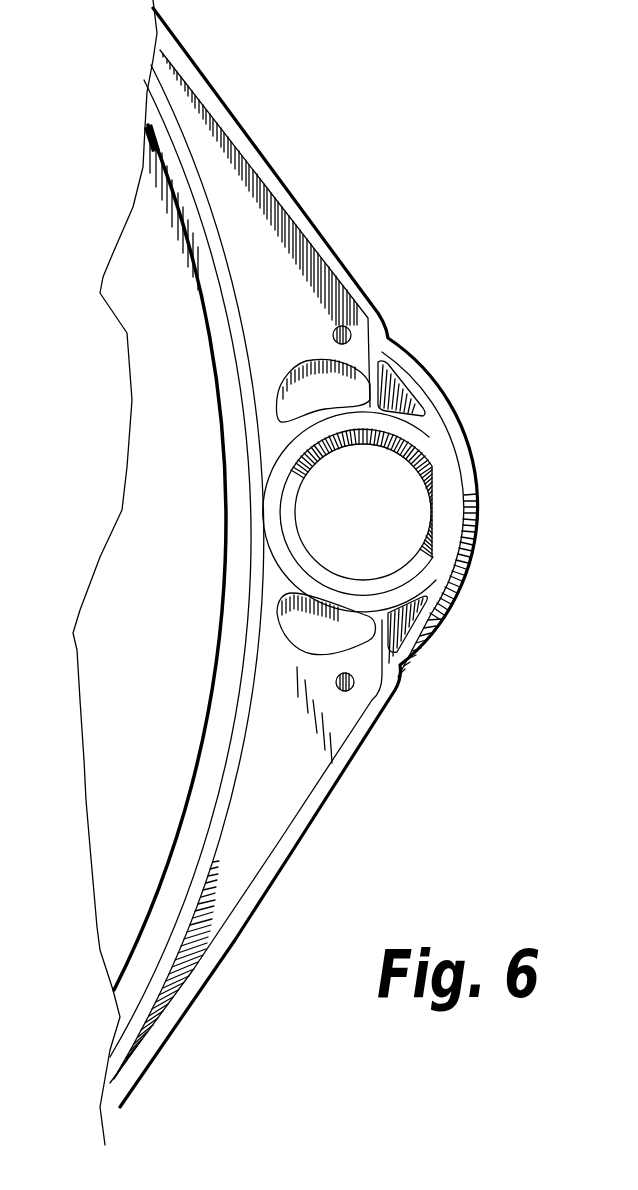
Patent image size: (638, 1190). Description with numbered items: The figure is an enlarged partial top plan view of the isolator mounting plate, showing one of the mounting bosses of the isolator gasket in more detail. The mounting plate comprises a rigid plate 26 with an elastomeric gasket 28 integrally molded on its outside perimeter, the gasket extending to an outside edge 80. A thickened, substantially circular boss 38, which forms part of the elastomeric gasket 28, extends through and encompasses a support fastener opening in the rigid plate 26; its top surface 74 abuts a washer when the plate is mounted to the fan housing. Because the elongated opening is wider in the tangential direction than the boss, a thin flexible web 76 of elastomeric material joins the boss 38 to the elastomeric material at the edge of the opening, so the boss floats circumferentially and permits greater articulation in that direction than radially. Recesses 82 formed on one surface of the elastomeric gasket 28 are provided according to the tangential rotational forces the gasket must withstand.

The rigid plate 26 is at (147, 495).
The elastomeric gasket 28 is at (218, 965).
The outside edge 80 is at (247, 136).
The recesses 82 is at (343, 390).
The top surface of the boss 74 is at (408, 432).
The thickened boss 38 is at (440, 517).
The flexible web 76 is at (348, 642).